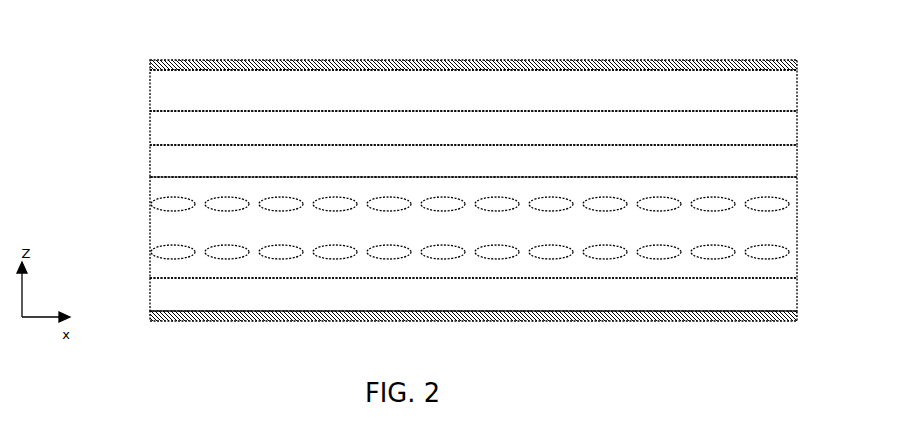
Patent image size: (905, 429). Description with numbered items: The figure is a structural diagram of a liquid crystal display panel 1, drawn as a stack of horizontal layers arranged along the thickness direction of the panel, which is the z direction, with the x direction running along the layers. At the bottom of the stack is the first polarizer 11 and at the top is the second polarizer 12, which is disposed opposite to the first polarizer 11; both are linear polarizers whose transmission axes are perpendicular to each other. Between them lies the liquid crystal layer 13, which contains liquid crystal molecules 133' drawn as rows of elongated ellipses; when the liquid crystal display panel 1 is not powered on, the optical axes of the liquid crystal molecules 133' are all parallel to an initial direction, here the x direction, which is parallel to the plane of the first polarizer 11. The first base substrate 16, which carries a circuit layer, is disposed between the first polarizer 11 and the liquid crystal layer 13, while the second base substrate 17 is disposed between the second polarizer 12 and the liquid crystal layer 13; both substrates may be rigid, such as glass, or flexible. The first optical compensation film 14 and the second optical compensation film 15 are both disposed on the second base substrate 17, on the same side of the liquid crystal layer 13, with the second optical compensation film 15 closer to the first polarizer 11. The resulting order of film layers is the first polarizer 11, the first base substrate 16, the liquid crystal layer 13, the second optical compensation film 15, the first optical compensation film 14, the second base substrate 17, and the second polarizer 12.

The liquid crystal display panel 1 is at (38, 50).
The first polarizer 11 is at (160, 316).
The second polarizer 12 is at (168, 66).
The liquid crystal layer 13 is at (433, 227).
The liquid crystal molecules 133' is at (132, 201).
The first optical compensation film 14 is at (168, 134).
The second optical compensation film 15 is at (168, 163).
The first base substrate 16 is at (160, 292).
The second base substrate 17 is at (168, 90).